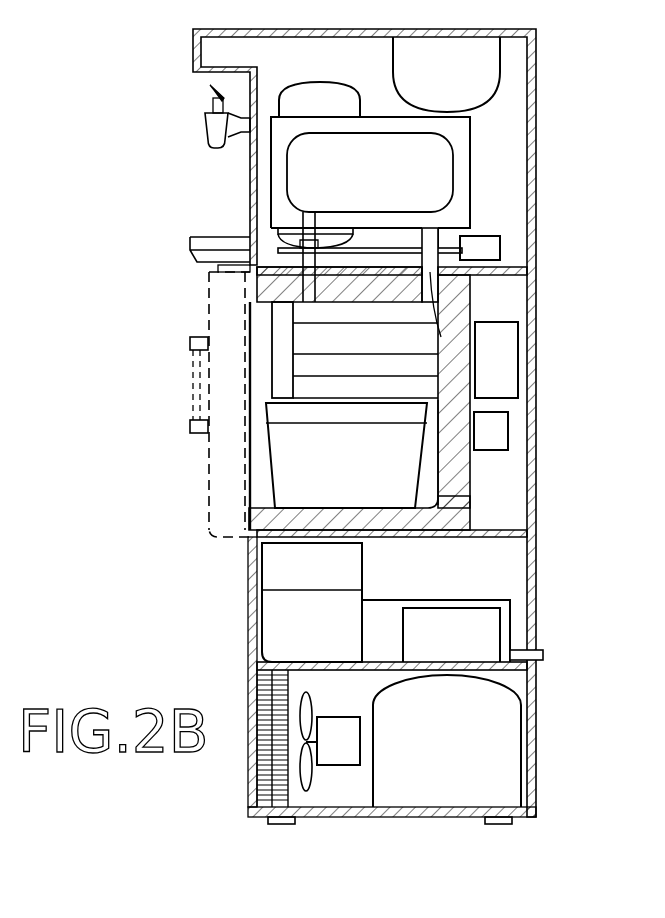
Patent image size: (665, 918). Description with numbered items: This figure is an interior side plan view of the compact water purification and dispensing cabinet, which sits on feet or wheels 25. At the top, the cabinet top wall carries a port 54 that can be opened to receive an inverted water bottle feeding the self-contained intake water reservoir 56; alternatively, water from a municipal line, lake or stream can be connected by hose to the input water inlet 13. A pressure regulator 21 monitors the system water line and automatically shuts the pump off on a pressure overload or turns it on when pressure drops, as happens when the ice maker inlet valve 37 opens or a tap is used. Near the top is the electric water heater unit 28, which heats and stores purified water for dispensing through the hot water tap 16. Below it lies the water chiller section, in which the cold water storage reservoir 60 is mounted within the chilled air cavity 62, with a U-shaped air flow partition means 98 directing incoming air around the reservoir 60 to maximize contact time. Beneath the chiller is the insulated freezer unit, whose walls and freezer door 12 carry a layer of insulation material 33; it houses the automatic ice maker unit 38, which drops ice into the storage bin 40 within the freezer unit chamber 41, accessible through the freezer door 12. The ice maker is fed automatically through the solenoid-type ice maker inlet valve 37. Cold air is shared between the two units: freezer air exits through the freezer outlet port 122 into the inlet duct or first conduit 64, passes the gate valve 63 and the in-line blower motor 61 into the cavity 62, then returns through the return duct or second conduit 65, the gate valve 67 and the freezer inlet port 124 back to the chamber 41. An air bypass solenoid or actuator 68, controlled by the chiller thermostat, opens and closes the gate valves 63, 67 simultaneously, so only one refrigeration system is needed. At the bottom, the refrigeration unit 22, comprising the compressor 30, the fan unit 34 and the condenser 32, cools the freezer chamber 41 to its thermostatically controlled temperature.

The freezer door 12 is at (222, 452).
The input water inlet 13 is at (543, 652).
The hot water tap 16 is at (208, 113).
The pressure regulator 21 is at (503, 363).
The refrigeration unit 22 is at (342, 688).
The feet or wheels 25 is at (268, 820).
The electric water heater unit 28 is at (323, 90).
The compressor 30 is at (468, 733).
The condenser 32 is at (258, 688).
The insulation material 33 is at (455, 508).
The fan unit 34 is at (338, 748).
The ice maker inlet valve 37 is at (495, 430).
The automatic ice maker unit 38 is at (285, 365).
The storage bin 40 is at (307, 472).
The freezer unit chamber 41 is at (428, 480).
The port 54 is at (423, 28).
The intake water reservoir 56 is at (467, 65).
The cold water storage reservoir 60 is at (415, 190).
The in-line blower motor 61 is at (310, 230).
The chilled air cavity 62 is at (457, 135).
The gate valve 63 is at (300, 238).
The inlet duct or first conduit 64 is at (295, 258).
The return duct or second conduit 65 is at (432, 276).
The gate valve 67 is at (438, 234).
The air bypass solenoid or actuator 68 is at (487, 249).
The air flow partition means 98 is at (307, 228).
The freezer outlet port 122 is at (310, 305).
The freezer inlet port 124 is at (463, 337).